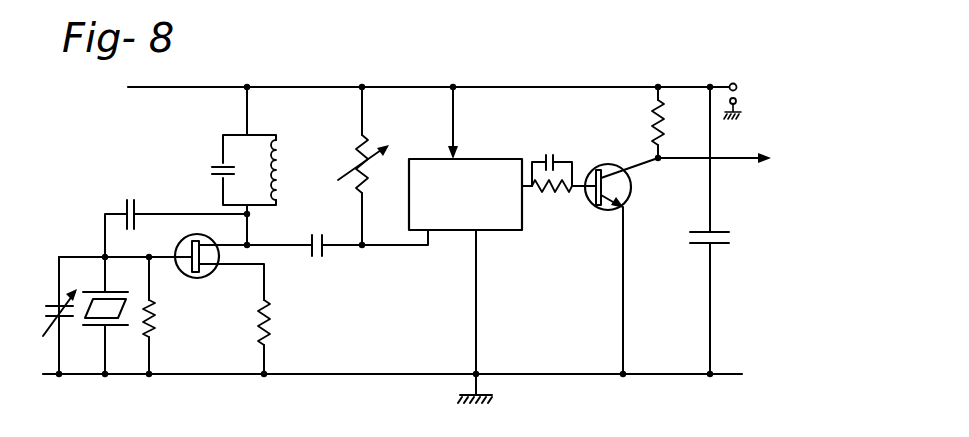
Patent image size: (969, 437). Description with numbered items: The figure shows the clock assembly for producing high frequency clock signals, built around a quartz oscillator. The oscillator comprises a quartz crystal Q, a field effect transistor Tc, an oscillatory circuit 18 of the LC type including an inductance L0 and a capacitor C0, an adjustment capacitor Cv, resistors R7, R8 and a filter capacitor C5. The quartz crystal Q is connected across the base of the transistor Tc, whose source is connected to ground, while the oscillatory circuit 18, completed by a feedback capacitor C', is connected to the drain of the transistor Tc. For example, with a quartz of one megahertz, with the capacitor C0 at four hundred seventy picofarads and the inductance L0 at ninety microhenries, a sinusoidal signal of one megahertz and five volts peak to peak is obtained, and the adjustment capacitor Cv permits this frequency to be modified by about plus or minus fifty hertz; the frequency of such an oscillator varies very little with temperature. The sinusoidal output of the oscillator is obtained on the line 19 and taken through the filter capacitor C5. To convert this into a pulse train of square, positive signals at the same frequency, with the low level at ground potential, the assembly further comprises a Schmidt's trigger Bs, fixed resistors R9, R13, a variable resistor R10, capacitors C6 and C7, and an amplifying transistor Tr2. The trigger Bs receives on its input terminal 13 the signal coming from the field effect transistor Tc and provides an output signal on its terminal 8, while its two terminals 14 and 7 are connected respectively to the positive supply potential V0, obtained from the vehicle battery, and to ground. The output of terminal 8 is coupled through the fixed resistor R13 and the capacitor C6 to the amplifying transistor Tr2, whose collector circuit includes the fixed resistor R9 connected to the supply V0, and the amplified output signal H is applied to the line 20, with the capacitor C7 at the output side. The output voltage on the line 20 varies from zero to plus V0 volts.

The oscillatory circuit 18 is at (236, 143).
The line 19 is at (366, 245).
The line 20 is at (714, 148).
The terminal 14 is at (458, 136).
The input terminal 13 is at (430, 215).
The terminal 7 is at (475, 303).
The terminal 8 is at (543, 188).
The capacitor C0 is at (222, 165).
The inductance L0 is at (280, 144).
The feedback capacitor C' is at (174, 220).
The adjustment capacitor Cv is at (50, 315).
The quartz crystal Q is at (105, 315).
The resistor R7 is at (165, 315).
The field effect transistor Tc is at (178, 249).
The resistor R8 is at (280, 337).
The filter capacitor C5 is at (311, 240).
The variable resistor R10 is at (370, 166).
The Schmidt's trigger Bs is at (486, 165).
The fixed resistor R13 is at (553, 193).
The capacitor C6 is at (555, 160).
The amplifying transistor Tr2 is at (627, 198).
The fixed resistor R9 is at (672, 122).
The capacitor C7 is at (713, 245).
The positive supply potential V0 is at (745, 96).
The output signal H is at (758, 177).